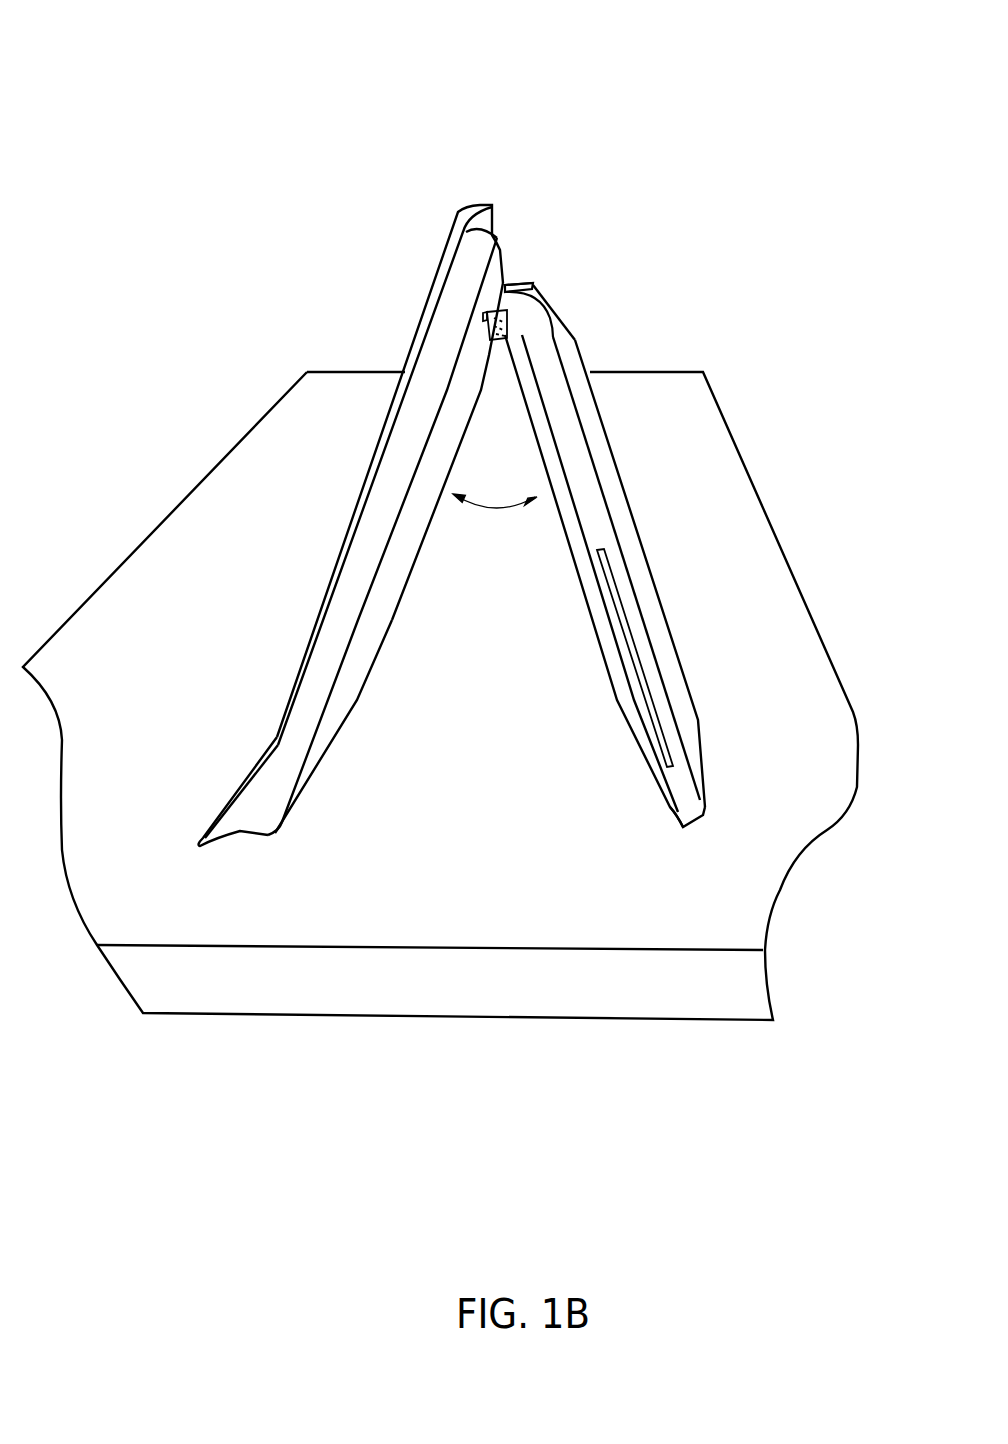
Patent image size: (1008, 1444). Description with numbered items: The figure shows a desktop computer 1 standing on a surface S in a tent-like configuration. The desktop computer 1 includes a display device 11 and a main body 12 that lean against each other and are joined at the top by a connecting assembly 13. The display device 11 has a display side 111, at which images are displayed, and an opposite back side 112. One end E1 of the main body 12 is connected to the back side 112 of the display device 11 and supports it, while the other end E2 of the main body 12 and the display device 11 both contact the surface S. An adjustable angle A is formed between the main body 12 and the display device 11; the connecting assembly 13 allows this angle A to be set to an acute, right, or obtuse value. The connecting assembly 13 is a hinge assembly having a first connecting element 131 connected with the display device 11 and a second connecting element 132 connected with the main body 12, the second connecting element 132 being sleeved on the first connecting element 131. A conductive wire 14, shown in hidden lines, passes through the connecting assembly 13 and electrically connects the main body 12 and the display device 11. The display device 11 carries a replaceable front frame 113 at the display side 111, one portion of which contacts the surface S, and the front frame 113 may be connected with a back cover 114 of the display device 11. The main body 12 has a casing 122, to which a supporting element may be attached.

The desktop computer 1 is at (593, 50).
The display device 11 is at (335, 452).
The main body 12 is at (605, 475).
The connecting assembly 13 is at (620, 265).
The conductive wire 14 is at (500, 330).
The display side 111 is at (330, 498).
The back side 112 is at (413, 538).
The front frame 113 is at (248, 787).
The back cover 114 is at (360, 673).
The casing 122 is at (628, 699).
The first connecting element 131 is at (505, 282).
The second connecting element 132 is at (560, 330).
The one end of the main body E1 is at (535, 278).
The other end of the main body E2 is at (670, 815).
The surface S is at (740, 490).
The angle A is at (495, 518).